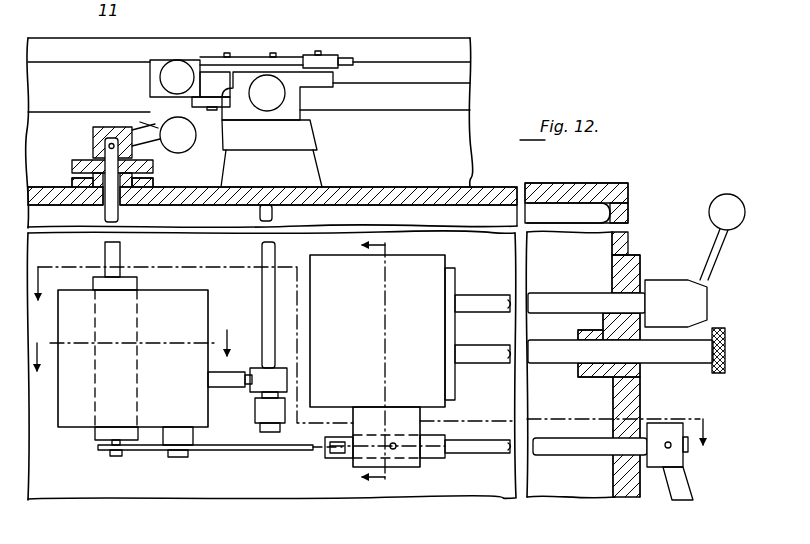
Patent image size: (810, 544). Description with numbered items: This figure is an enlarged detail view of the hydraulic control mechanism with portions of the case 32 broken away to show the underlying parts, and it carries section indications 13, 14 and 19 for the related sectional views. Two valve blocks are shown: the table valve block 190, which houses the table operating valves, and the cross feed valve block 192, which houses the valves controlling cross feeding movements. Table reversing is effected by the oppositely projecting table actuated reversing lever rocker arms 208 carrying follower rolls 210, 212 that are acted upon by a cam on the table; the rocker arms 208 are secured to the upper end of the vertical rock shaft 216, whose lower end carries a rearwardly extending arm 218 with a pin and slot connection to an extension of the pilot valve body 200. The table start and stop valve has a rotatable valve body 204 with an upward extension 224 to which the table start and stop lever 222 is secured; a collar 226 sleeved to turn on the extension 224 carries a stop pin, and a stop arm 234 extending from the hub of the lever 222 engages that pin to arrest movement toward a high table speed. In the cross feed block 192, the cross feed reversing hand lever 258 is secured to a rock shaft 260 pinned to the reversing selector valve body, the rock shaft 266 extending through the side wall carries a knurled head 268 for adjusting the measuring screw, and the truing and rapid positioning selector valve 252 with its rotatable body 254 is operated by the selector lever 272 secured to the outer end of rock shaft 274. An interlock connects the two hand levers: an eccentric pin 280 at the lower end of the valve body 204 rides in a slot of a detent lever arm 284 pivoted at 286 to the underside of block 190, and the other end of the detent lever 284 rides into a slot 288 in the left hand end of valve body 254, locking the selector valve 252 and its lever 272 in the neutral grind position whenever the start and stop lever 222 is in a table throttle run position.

The housing 32 is at (460, 57).
The follower roll 212 is at (330, 58).
The table actuated reversing lever rocker arm 208 is at (314, 84).
The follower roll 210 is at (201, 108).
The table start and stop lever 222 is at (156, 118).
The stop arm 234 is at (85, 148).
The collar 226 is at (73, 160).
The table valve block 190 is at (78, 440).
The start and stop valve body 204 is at (126, 283).
The upward extension of the start and stop valve body 224 is at (105, 258).
The rock shaft 216 is at (262, 261).
The rearwardly extending arm 218 is at (280, 383).
The pilot valve body 200 is at (215, 390).
The cross feed valve block 192 is at (418, 274).
The truing and rapid positioning selector valve 252 is at (400, 427).
The valve body 254 is at (436, 459).
The slot 288 is at (334, 460).
The detent lever arm 284 is at (250, 450).
The eccentric pin 280 is at (114, 457).
The pivot 286 is at (178, 458).
The rock shaft 260 is at (560, 303).
The cross feed reversing hand lever 258 is at (709, 248).
The rock shaft 266 is at (670, 358).
The knurled head 268 is at (714, 330).
The rock shaft 274 is at (573, 457).
The truing and rapid positioning selector lever 272 is at (668, 482).
The section line 13 is at (368, 356).
The section line 14 is at (130, 350).
The section line 19 is at (388, 366).